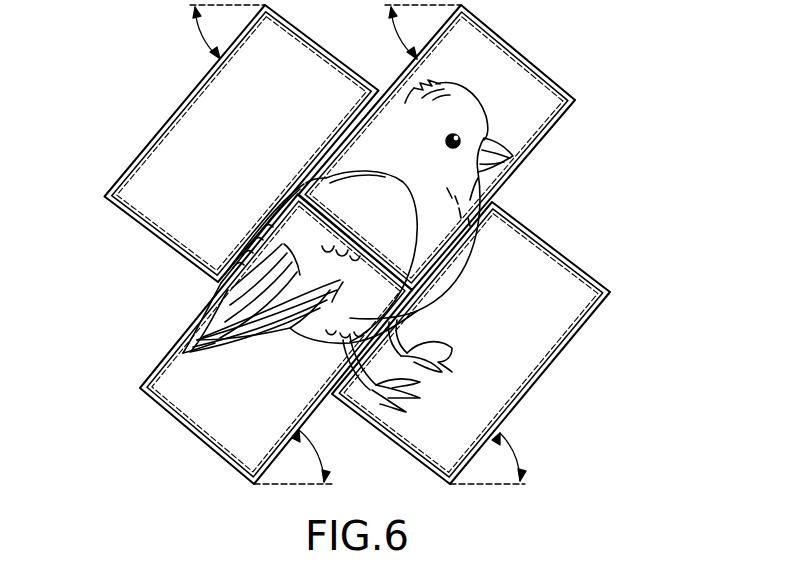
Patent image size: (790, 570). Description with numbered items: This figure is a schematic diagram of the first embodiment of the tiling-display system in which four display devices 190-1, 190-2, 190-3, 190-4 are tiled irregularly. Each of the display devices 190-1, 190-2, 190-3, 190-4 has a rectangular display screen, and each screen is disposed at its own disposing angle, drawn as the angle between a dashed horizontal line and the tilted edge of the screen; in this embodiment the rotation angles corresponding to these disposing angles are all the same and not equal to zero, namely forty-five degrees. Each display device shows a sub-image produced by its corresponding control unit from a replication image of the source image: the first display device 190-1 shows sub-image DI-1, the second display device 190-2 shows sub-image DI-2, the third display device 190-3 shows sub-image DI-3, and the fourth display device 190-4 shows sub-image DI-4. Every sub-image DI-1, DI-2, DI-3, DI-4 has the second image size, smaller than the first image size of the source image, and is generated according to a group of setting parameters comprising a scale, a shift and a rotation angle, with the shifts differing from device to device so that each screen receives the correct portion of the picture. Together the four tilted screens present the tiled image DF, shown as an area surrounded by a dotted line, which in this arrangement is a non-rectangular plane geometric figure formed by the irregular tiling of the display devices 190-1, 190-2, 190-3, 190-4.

The display device 190-1 is at (178, 96).
The display device 190-2 is at (555, 84).
The display device 190-3 is at (175, 345).
The display device 190-4 is at (553, 246).
The sub-image DI-1 is at (187, 161).
The sub-image DI-2 is at (514, 118).
The sub-image DI-3 is at (215, 405).
The sub-image DI-4 is at (520, 335).
The tiled image DF is at (512, 404).